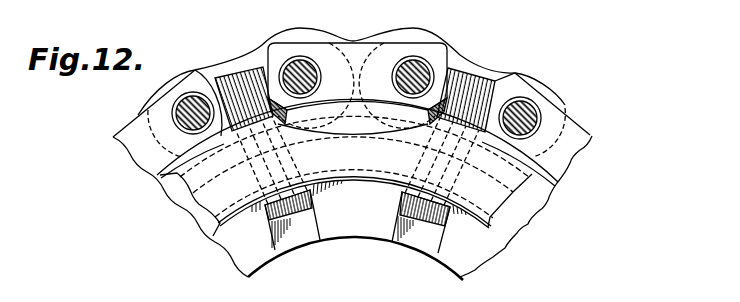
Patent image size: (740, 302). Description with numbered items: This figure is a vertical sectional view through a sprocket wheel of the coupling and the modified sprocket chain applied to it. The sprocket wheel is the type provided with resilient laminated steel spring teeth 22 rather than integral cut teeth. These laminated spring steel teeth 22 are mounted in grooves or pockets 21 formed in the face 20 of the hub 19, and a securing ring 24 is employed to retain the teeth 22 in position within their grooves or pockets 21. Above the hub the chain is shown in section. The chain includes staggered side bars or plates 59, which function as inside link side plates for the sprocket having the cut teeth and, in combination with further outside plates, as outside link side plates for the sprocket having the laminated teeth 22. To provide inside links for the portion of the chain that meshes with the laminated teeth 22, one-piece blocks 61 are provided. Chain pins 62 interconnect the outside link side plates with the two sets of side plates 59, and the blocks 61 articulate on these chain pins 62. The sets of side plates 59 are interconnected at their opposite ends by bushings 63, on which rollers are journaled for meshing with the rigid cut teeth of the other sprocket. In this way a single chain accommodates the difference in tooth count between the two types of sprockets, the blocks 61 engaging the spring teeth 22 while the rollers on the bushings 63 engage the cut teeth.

The hub 19 is at (262, 266).
The face 20 is at (356, 216).
The grooves or pockets 21 is at (297, 236).
The laminated steel spring teeth 22 is at (236, 78).
The securing ring 24 is at (244, 224).
The side plates 59 is at (252, 48).
The one-piece blocks 61 is at (589, 134).
The chain pins 62 is at (419, 68).
The bushings 63 is at (186, 94).